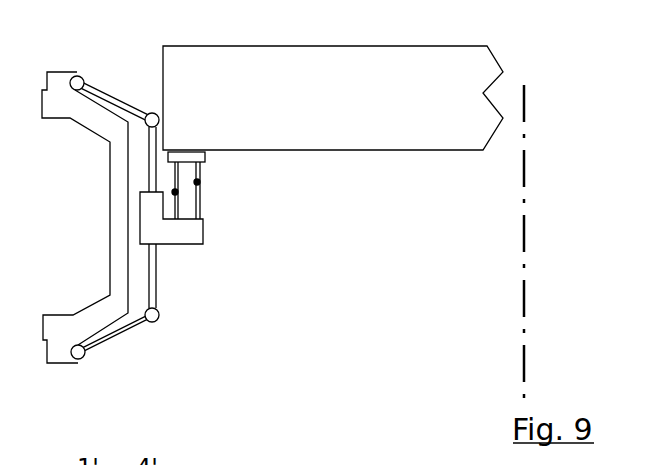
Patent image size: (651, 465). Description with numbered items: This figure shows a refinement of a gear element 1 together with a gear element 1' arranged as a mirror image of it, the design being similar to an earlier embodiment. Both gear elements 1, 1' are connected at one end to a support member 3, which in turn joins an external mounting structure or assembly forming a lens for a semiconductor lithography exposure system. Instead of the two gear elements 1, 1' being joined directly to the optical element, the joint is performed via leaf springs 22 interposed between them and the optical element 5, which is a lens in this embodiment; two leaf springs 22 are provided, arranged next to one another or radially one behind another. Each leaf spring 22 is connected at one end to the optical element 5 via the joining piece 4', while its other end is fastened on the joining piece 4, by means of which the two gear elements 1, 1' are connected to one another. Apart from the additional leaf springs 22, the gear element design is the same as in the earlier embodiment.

The gear element 1 is at (127, 321).
The gear element 1' is at (114, 99).
The support member 3 is at (118, 213).
The joining piece 4 is at (207, 264).
The joining piece 4' is at (206, 152).
The optical element 5 is at (381, 120).
The leaf springs 22 is at (175, 192).